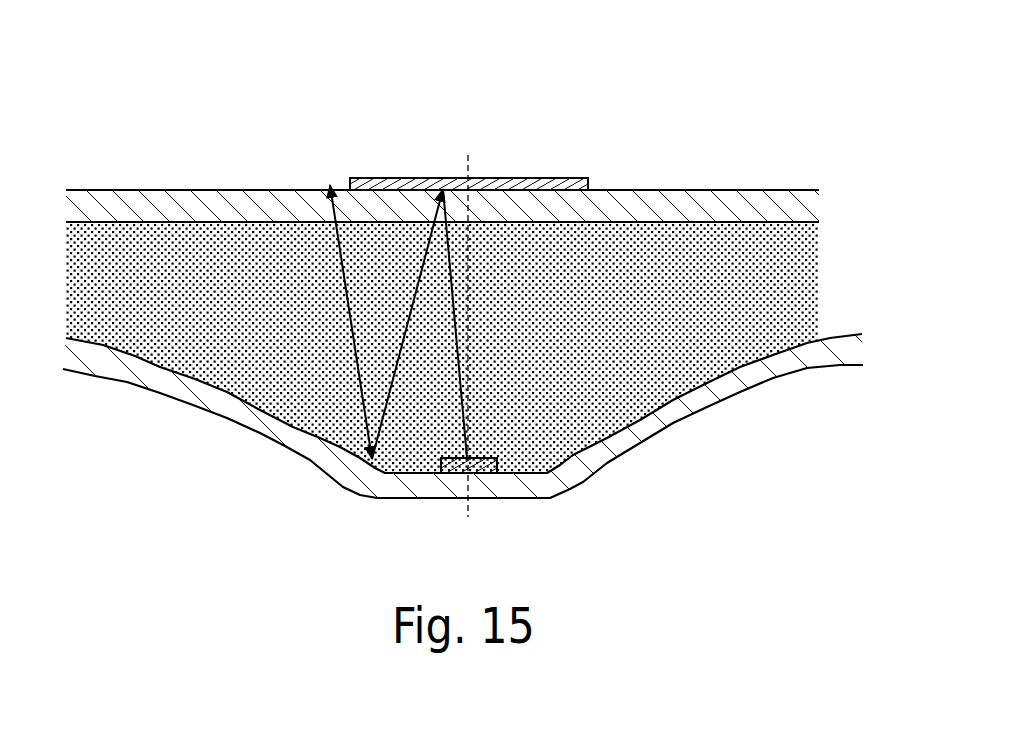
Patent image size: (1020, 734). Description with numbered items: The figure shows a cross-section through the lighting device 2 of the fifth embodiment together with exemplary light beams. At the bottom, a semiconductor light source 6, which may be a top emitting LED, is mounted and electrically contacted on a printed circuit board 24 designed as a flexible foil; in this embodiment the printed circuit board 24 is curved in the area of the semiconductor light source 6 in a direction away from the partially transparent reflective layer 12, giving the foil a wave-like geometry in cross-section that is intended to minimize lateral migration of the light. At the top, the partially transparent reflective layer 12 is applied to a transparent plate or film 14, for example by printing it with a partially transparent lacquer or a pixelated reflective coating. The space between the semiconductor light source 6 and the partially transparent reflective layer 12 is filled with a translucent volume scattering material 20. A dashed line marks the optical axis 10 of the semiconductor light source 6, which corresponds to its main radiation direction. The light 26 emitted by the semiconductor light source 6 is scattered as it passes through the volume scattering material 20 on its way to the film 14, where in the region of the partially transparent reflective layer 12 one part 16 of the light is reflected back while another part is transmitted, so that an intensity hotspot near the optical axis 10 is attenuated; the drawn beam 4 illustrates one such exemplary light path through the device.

The lighting device 2 is at (769, 122).
The emitted light beam 4 is at (331, 208).
The semiconductor light source 6 is at (487, 454).
The optical axis 10 is at (468, 157).
The partially transparent reflective layer 12 is at (560, 181).
The transparent plate or film 14 is at (686, 206).
The reflected part of the light 16 is at (426, 261).
The translucent volume scattering material 20 is at (631, 313).
The printed circuit board 24 is at (688, 407).
The emitted light 26 is at (470, 250).